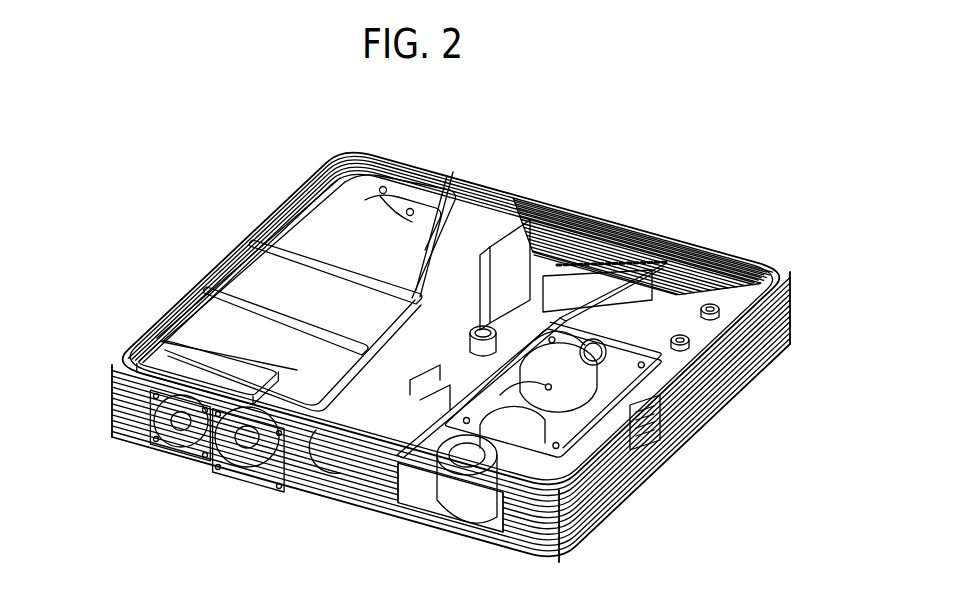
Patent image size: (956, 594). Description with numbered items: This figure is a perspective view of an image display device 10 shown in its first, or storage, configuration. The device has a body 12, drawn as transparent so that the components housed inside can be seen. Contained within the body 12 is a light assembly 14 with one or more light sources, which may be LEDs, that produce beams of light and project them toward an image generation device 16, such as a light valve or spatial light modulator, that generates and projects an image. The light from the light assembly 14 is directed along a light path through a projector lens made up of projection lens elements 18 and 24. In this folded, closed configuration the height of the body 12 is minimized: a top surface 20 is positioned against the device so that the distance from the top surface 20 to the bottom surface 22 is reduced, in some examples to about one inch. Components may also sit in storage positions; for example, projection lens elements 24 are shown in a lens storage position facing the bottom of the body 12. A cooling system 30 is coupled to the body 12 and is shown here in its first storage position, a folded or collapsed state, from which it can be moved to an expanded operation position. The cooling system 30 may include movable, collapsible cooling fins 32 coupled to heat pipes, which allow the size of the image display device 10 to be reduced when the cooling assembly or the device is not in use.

The image display device 10 is at (684, 199).
The body 12 is at (703, 258).
The light assembly 14 is at (475, 325).
The image generation device 16 is at (746, 264).
The projection lens element 18 is at (560, 396).
The top surface 20 is at (206, 428).
The bottom surface 22 is at (308, 493).
The projection lens element 24 is at (468, 483).
The cooling system 30 is at (249, 254).
The cooling fins 32 is at (245, 328).